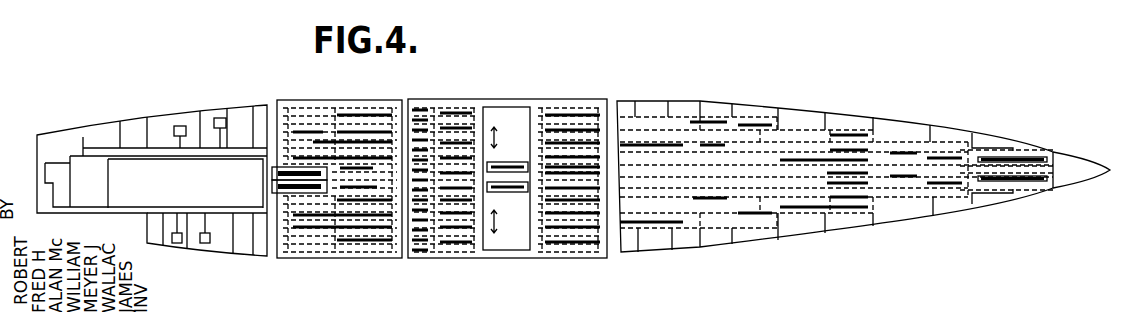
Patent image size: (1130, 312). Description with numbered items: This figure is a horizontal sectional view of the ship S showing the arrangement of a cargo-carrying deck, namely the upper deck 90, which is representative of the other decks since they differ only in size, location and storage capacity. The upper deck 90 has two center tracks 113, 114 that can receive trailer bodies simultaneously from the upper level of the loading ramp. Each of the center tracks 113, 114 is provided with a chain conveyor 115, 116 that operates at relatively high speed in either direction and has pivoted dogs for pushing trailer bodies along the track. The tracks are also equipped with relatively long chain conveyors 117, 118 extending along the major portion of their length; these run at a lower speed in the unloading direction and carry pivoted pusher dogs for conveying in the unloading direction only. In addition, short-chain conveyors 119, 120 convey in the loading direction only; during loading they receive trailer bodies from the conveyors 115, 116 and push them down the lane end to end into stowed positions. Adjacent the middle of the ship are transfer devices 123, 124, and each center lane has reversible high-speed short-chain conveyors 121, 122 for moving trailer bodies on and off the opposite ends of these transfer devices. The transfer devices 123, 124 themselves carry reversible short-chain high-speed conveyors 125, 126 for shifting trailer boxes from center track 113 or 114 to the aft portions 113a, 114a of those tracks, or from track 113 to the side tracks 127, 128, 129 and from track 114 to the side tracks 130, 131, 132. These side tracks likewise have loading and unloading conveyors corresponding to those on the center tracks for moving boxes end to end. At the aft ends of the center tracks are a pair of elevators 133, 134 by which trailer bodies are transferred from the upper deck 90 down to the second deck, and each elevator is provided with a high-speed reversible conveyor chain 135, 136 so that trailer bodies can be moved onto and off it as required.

The ship S is at (803, 96).
The upper deck 90 is at (922, 122).
The center track 113 is at (995, 157).
The portion of track aft of transfer device 113a is at (357, 168).
The center track 114 is at (998, 181).
The portion of track aft of transfer device 114a is at (377, 191).
The chain conveyor 115 is at (1038, 159).
The chain conveyor 116 is at (1042, 180).
The chain conveyor 117 is at (892, 166).
The chain conveyor 118 is at (900, 175).
The short-chain conveyor 119 is at (950, 159).
The short-chain conveyor 120 is at (952, 184).
The reversible high-speed short-chain conveyor 121 is at (573, 167).
The reversible high-speed short-chain conveyor 122 is at (570, 188).
The transfer device 123 is at (517, 122).
The transfer device 124 is at (518, 233).
The reversible short-chain high-speed conveyor 125 is at (508, 166).
The reversible short-chain high-speed conveyor 126 is at (510, 188).
The track 127 is at (547, 143).
The track 128 is at (588, 136).
The track 129 is at (602, 120).
The track 130 is at (599, 198).
The track 131 is at (657, 214).
The track 132 is at (557, 247).
The elevator 133 is at (279, 167).
The elevator 134 is at (280, 195).
The high-speed reversible conveyor chain 135 is at (308, 176).
The high-speed reversible conveyor chain 136 is at (308, 190).